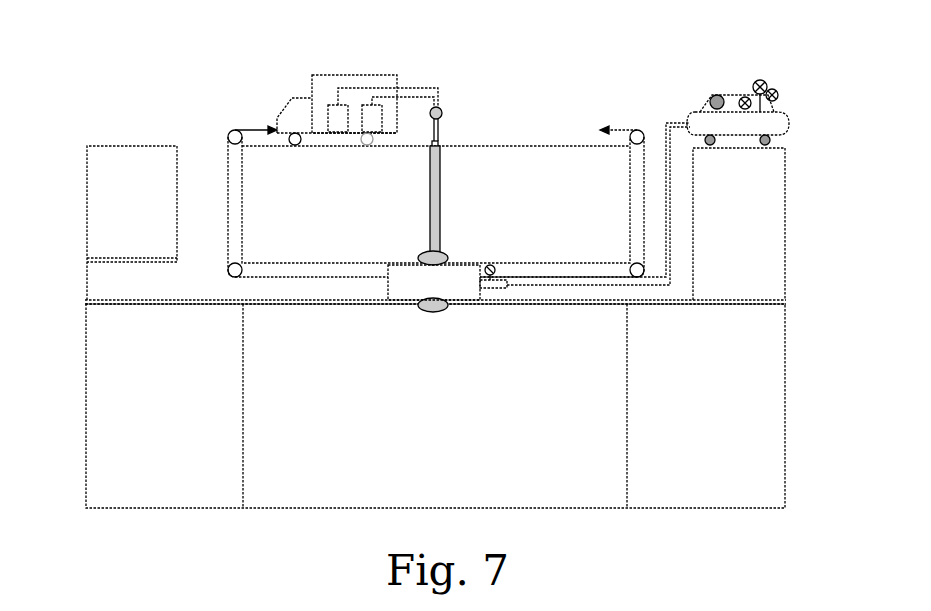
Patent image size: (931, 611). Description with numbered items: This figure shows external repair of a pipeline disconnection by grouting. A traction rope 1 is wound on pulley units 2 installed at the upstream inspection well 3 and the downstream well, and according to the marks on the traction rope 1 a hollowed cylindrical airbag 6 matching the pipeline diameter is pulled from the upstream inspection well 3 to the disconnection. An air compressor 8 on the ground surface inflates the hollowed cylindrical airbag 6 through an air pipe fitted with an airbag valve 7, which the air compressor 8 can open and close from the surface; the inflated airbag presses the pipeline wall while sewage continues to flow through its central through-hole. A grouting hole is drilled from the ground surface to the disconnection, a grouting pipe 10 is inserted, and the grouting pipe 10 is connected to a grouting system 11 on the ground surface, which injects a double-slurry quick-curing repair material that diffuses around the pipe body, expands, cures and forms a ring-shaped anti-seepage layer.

The traction rope 1 is at (620, 127).
The pulley unit 2 is at (230, 130).
The upstream inspection well 3 is at (193, 158).
The hollowed cylindrical airbag 6 is at (435, 282).
The airbag valve 7 is at (495, 283).
The air compressor 8 is at (705, 120).
The grouting pipe 10 is at (440, 188).
The grouting system 11 is at (397, 75).